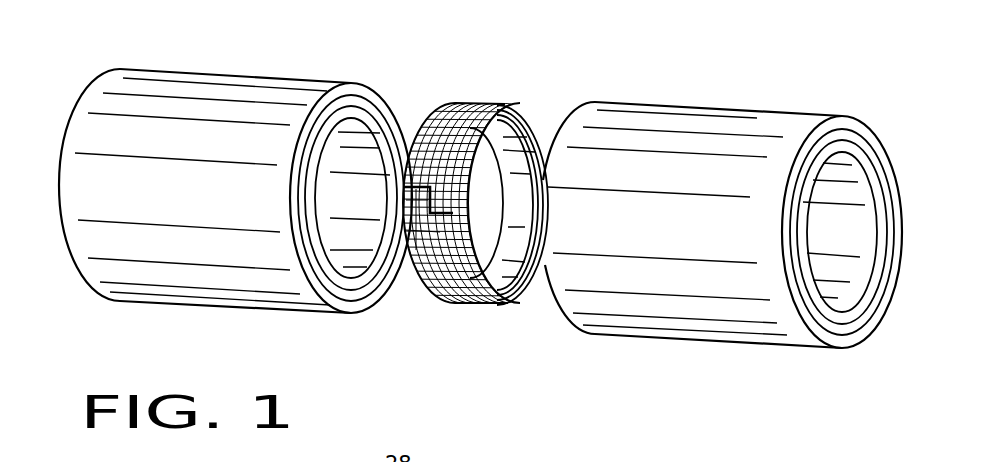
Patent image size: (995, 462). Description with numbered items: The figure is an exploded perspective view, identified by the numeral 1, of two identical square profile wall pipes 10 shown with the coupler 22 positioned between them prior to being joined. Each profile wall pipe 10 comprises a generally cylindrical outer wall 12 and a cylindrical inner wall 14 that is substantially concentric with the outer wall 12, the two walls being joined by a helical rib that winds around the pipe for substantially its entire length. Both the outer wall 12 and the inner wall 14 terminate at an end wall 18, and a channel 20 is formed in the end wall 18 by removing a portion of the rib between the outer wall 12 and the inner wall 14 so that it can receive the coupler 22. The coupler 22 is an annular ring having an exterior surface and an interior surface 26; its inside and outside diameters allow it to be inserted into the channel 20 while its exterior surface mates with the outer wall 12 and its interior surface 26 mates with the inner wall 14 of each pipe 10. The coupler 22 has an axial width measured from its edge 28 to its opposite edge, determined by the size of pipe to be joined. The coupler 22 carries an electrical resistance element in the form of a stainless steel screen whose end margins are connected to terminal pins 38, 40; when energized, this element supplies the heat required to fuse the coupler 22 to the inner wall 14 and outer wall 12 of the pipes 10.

The tube assembly 1 is at (193, 215).
The profile wall pipe 10 is at (81, 96).
The outer wall 12 is at (392, 87).
The inner wall 14 is at (352, 207).
The end wall 18 is at (366, 80).
The channel 20 is at (325, 278).
The coupler 22 is at (487, 313).
The interior surface 26 is at (516, 224).
The edge 28 is at (520, 203).
The terminal pin 38 is at (443, 224).
The terminal pin 40 is at (441, 209).